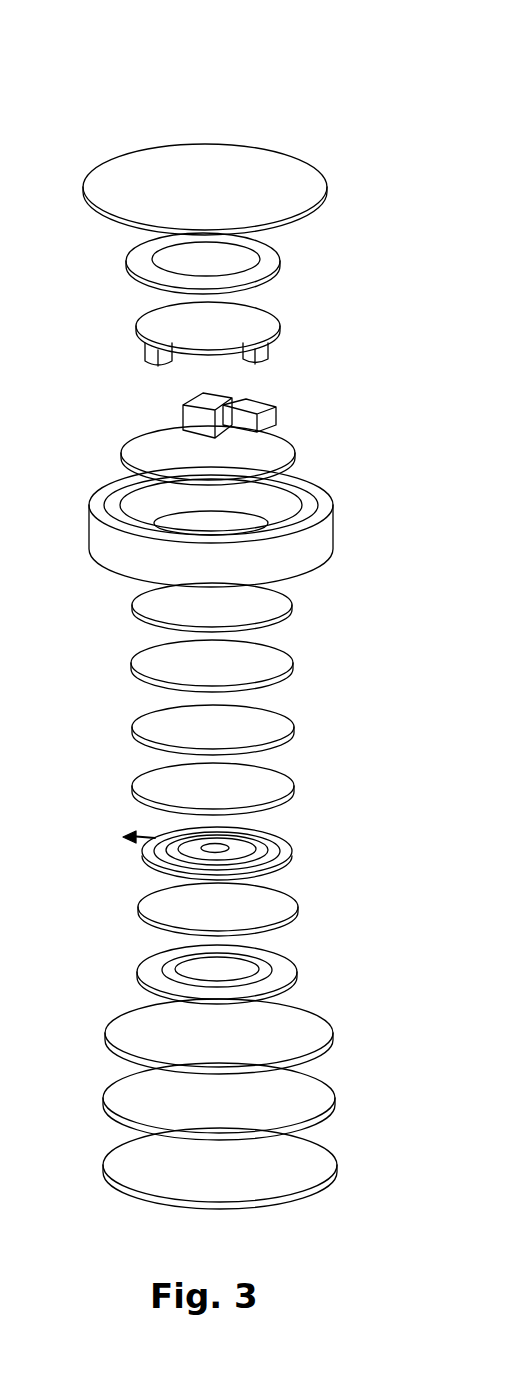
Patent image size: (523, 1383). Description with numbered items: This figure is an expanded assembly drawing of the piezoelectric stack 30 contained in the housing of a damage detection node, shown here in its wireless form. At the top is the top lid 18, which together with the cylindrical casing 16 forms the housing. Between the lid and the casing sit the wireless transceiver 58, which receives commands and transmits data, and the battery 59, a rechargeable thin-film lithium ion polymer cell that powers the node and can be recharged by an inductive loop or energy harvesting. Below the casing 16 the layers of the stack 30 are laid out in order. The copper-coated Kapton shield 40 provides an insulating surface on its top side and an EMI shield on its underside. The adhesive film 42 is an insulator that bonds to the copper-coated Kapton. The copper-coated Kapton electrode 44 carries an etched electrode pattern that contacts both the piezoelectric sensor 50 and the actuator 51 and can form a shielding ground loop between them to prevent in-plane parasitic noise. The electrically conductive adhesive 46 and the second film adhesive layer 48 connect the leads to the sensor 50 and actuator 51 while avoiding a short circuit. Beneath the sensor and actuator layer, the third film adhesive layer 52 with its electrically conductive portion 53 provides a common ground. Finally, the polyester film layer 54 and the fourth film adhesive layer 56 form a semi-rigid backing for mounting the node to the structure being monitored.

The piezoelectric stack 30 is at (146, 90).
The top lid 18 is at (310, 173).
The wireless transceiver 58 is at (277, 262).
The battery 59 is at (262, 405).
The cylindrical casing 16 is at (322, 527).
The copper-coated Kapton shield 40 is at (295, 607).
The adhesive film 42 is at (142, 730).
The copper-coated Kapton electrode 44 is at (297, 788).
The electrically conductive adhesive 46 is at (148, 903).
The second film adhesive layer 48 is at (300, 915).
The piezoelectric sensor 50 is at (190, 968).
The actuator 51 is at (292, 962).
The third film adhesive layer 52 is at (338, 1040).
The electrically conductive portion 53 is at (117, 1030).
The polyester film layer 54 is at (110, 1095).
The fourth film adhesive layer 56 is at (333, 1157).